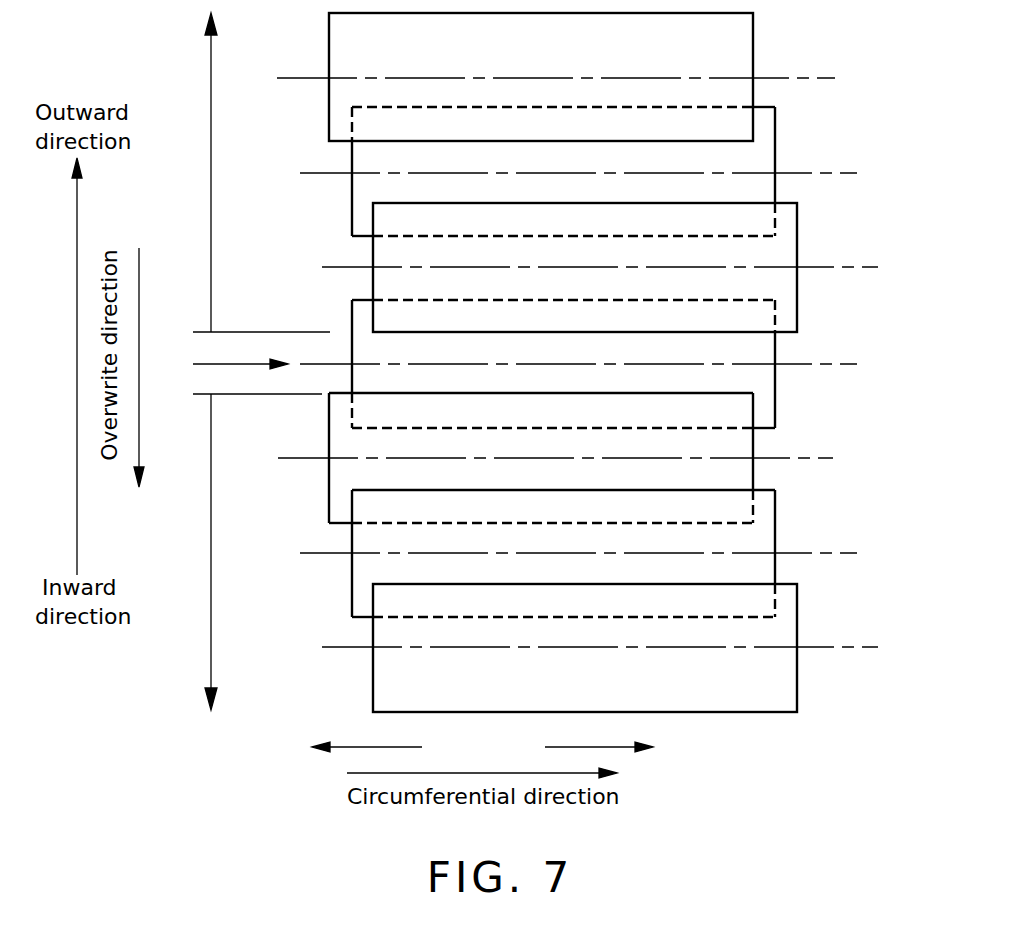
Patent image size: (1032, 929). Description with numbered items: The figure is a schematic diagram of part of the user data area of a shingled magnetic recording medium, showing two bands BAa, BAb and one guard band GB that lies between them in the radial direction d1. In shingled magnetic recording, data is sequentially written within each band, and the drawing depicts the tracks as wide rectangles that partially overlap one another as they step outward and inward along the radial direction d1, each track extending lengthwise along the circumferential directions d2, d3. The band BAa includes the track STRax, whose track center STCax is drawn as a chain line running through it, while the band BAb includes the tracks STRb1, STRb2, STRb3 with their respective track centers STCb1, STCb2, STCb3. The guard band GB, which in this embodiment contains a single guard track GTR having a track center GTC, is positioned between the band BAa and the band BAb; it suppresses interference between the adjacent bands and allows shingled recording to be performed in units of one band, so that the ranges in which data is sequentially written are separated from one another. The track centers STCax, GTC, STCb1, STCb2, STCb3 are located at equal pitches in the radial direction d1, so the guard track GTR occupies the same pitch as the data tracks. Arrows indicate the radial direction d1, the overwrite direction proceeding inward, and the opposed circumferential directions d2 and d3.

The track STRax is at (799, 237).
The guard track GTR is at (777, 402).
The track STRb1 is at (755, 480).
The track STRb2 is at (777, 570).
The track STRb3 is at (799, 687).
The track center STCax is at (337, 268).
The track center GTC is at (835, 362).
The track center STCb1 is at (307, 459).
The track center STCb2 is at (323, 554).
The track center STCb3 is at (337, 648).
The guard band GB is at (221, 364).
The band BAa is at (242, 172).
The band BAb is at (238, 552).
The radial direction d1 is at (66, 366).
The circumferential direction d2 is at (618, 747).
The circumferential direction d3 is at (352, 747).